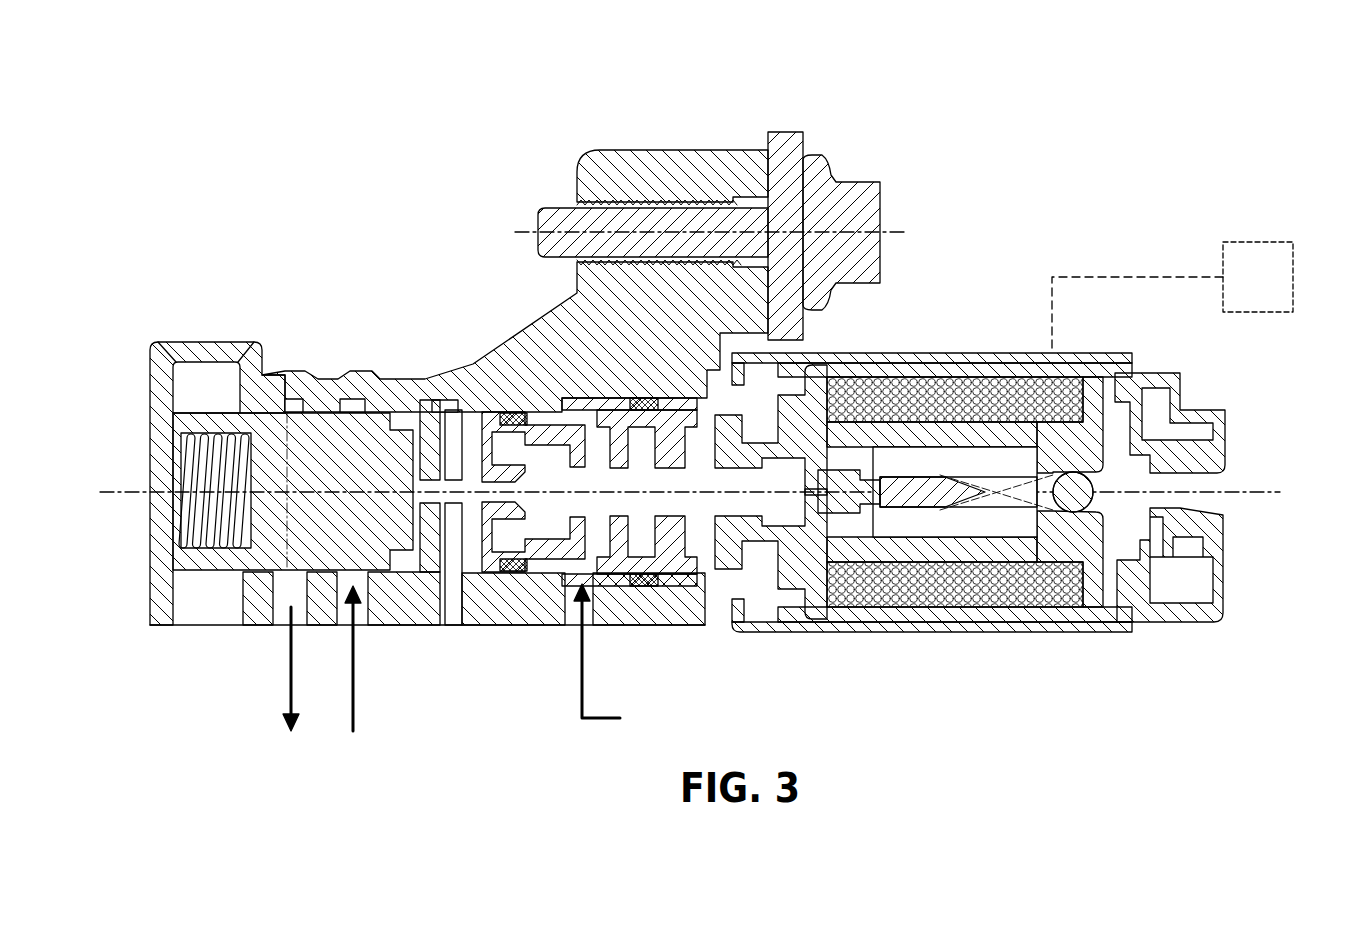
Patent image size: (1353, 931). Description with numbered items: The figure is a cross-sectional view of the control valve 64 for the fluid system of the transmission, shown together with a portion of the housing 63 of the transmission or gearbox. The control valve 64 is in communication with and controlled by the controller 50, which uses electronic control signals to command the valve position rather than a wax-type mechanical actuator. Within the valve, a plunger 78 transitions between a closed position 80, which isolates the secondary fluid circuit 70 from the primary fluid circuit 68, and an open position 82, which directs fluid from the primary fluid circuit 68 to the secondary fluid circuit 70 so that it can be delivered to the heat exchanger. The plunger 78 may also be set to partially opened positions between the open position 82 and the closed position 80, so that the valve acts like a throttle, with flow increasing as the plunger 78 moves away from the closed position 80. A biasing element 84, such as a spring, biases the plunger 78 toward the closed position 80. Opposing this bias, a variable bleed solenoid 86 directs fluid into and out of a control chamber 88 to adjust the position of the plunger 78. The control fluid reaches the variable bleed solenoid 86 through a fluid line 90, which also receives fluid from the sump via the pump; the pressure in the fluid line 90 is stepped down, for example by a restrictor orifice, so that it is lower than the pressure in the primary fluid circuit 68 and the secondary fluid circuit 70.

The controller 50 is at (1246, 242).
The housing 63 is at (683, 150).
The control valve 64 is at (1002, 281).
The primary fluid circuit 68 is at (356, 692).
The secondary fluid circuit 70 is at (288, 692).
The plunger 78 is at (274, 418).
The closed position 80 is at (333, 380).
The open position 82 is at (214, 491).
The biasing element 84 is at (157, 403).
The variable bleed solenoid 86 is at (915, 372).
The control chamber 88 is at (418, 468).
The fluid line 90 is at (579, 695).